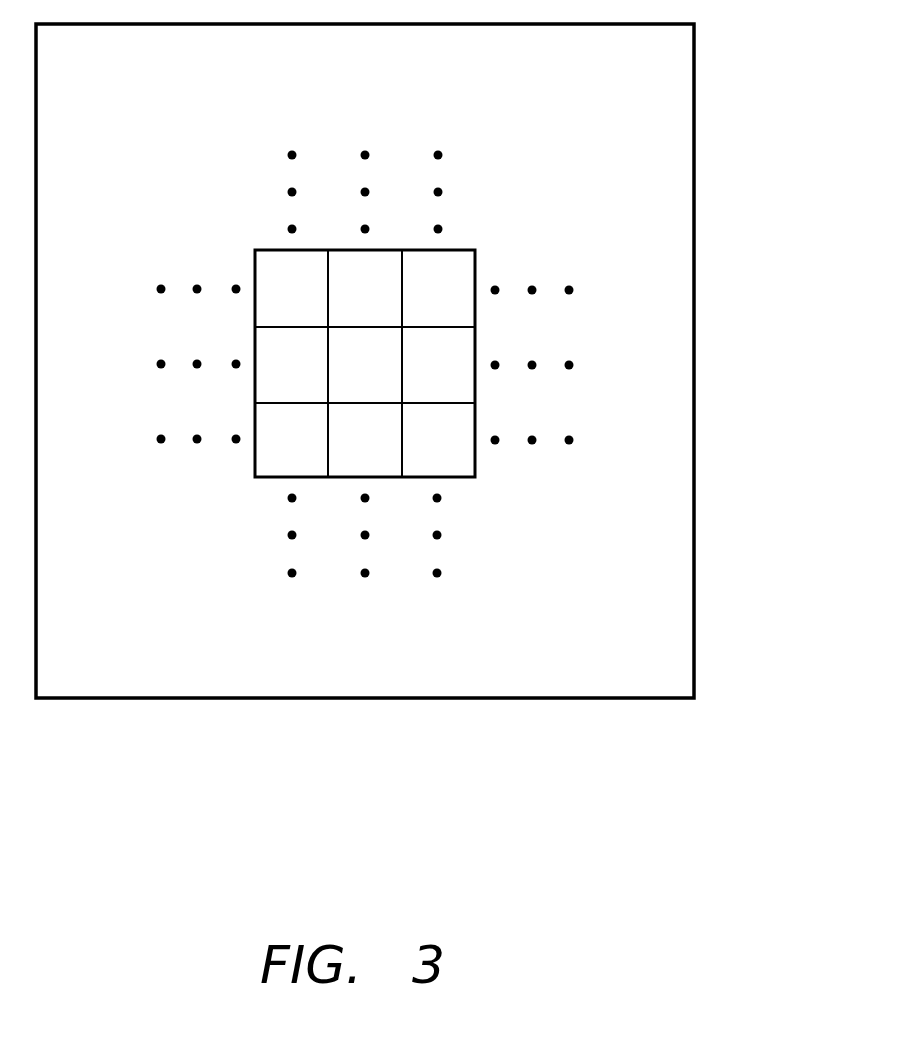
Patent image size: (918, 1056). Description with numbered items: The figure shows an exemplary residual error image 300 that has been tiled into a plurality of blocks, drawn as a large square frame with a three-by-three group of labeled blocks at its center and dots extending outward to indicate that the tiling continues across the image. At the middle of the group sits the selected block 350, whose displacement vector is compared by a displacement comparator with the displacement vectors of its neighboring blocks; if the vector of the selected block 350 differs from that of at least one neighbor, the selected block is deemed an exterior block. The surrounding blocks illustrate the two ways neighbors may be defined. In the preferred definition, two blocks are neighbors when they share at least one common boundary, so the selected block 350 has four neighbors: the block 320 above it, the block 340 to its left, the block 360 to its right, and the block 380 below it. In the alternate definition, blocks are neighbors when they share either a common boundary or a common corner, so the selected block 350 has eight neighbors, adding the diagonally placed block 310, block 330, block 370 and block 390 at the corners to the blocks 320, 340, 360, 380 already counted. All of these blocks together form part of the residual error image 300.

The residual error image 300 is at (695, 147).
The block 310 is at (291, 288).
The block 320 is at (365, 288).
The block 330 is at (438, 288).
The block 340 is at (291, 365).
The selected block 350 is at (365, 365).
The block 360 is at (438, 365).
The block 370 is at (291, 440).
The block 380 is at (365, 440).
The block 390 is at (438, 440).